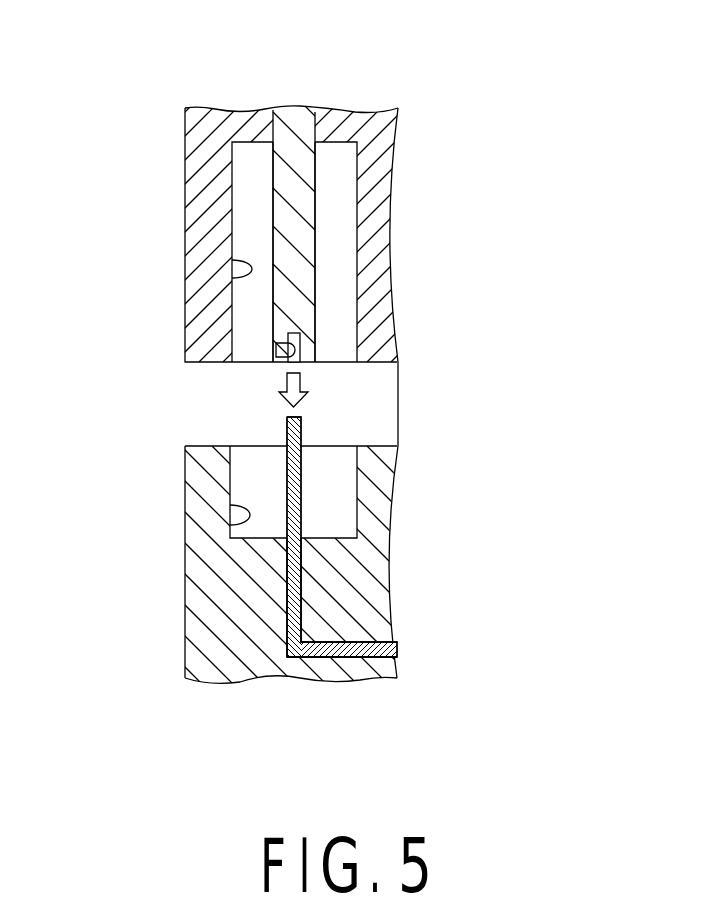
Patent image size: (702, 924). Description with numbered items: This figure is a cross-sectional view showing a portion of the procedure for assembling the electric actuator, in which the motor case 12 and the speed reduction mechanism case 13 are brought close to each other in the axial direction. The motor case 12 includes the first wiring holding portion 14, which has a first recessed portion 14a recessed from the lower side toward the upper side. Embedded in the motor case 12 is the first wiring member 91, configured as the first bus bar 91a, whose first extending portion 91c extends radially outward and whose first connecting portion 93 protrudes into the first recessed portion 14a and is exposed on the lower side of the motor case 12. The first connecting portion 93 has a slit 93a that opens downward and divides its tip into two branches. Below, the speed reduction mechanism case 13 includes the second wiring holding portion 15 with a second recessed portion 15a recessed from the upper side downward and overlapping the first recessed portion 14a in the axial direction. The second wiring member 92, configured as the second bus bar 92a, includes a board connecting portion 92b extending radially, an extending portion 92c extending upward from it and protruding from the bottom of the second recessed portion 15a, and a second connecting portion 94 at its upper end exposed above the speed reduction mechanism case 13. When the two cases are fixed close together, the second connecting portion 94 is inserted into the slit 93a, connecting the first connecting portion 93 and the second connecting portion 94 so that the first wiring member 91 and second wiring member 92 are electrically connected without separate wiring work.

The motor case 12 is at (183, 170).
The speed reduction mechanism case 13 is at (183, 492).
The first wiring holding portion 14 is at (205, 210).
The first recessed portion 14a is at (237, 268).
The second wiring holding portion 15 is at (205, 585).
The second recessed portion 15a is at (240, 520).
The first wiring member 91 is at (291, 100).
The first bus bar 91a is at (318, 225).
The first extending portion 91c is at (297, 182).
The second wiring member 92 is at (351, 664).
The second bus bar 92a is at (516, 542).
The board connecting portion 92b is at (365, 640).
The extending portion 92c is at (303, 583).
The first connecting portion 93 is at (305, 338).
The slit 93a is at (280, 345).
The second connecting portion 94 is at (302, 428).